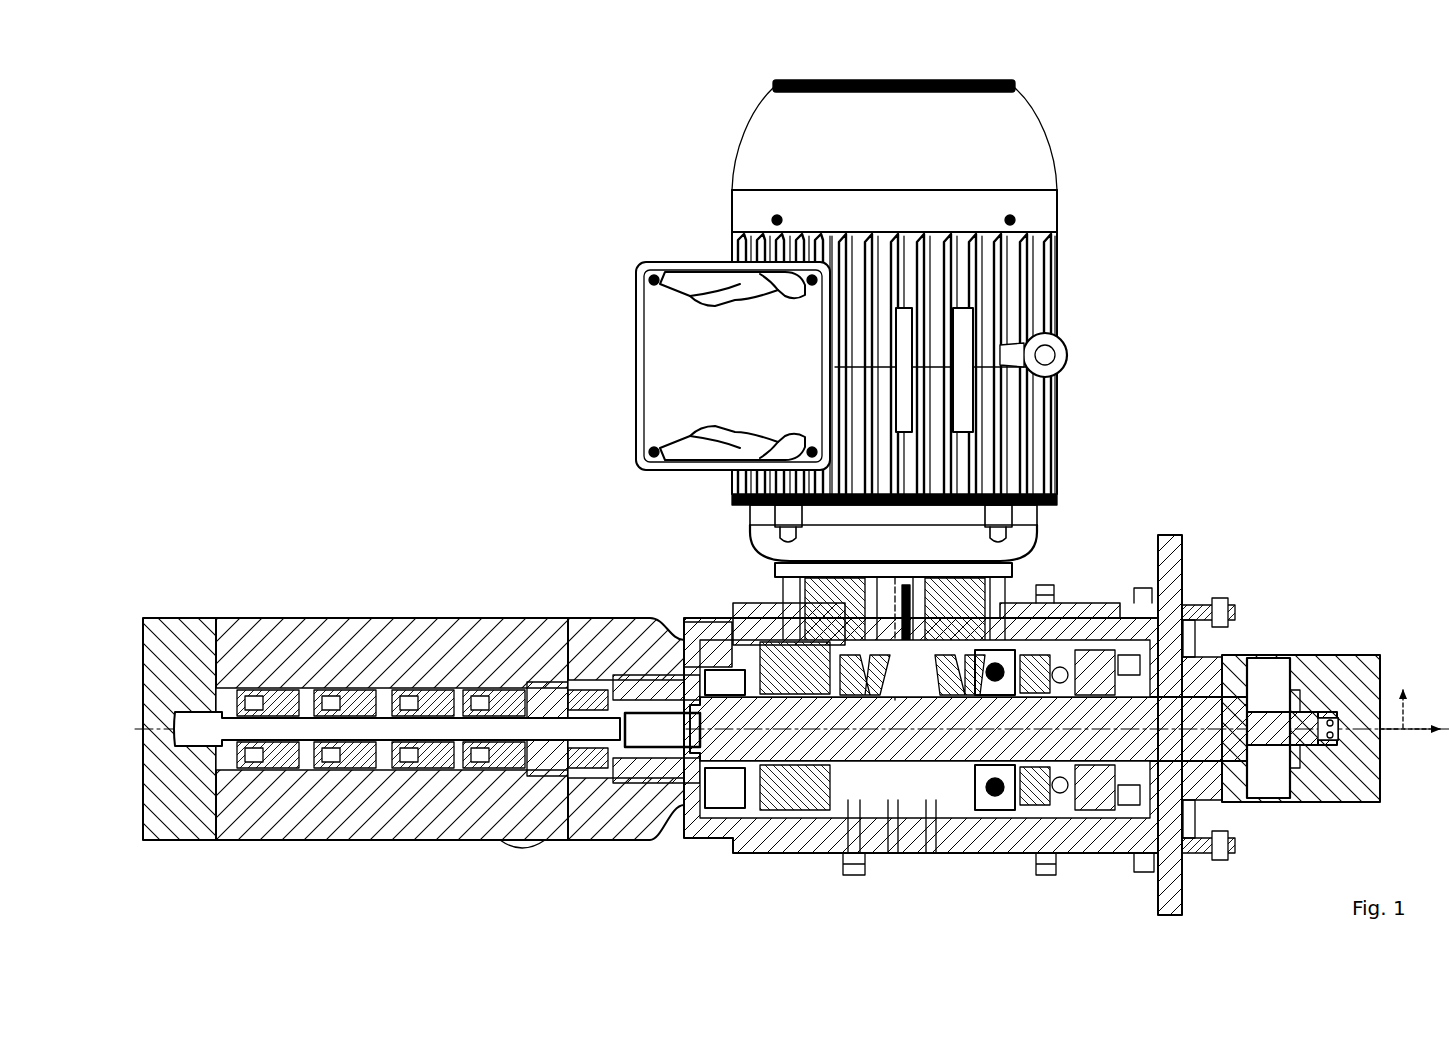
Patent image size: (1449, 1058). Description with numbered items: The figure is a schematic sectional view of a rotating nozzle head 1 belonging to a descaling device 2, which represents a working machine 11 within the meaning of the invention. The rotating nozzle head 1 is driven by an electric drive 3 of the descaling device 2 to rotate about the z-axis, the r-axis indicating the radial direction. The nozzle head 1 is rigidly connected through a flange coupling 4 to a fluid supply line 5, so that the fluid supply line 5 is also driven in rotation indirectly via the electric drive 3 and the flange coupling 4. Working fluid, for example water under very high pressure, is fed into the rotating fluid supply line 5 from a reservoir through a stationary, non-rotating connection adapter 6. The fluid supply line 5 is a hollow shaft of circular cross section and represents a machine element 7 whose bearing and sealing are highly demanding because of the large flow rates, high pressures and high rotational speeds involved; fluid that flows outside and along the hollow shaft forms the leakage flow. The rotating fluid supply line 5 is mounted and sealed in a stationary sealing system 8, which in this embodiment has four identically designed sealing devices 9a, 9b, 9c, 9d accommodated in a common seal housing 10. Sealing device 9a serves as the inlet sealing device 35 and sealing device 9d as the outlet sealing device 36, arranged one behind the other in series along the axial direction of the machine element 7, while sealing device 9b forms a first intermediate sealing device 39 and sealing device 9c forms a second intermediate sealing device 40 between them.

The rotating nozzle head 1 is at (764, 709).
The descaling device 2 is at (922, 364).
The working machine 11 is at (922, 364).
The electric drive 3 is at (1060, 296).
The flange coupling 4 is at (672, 790).
The fluid supply line 5 is at (709, 746).
The machine element 7 is at (173, 735).
The connection adapter 6 is at (163, 622).
The sealing system 8 is at (379, 635).
The sealing device 9a is at (268, 666).
The inlet sealing device 35 is at (270, 690).
The sealing device 9b is at (345, 666).
The first intermediate sealing device 39 is at (346, 690).
The sealing device 9c is at (423, 666).
The second intermediate sealing device 40 is at (425, 690).
The sealing device 9d is at (494, 666).
The outlet sealing device 36 is at (494, 666).
The seal housing 10 is at (372, 828).